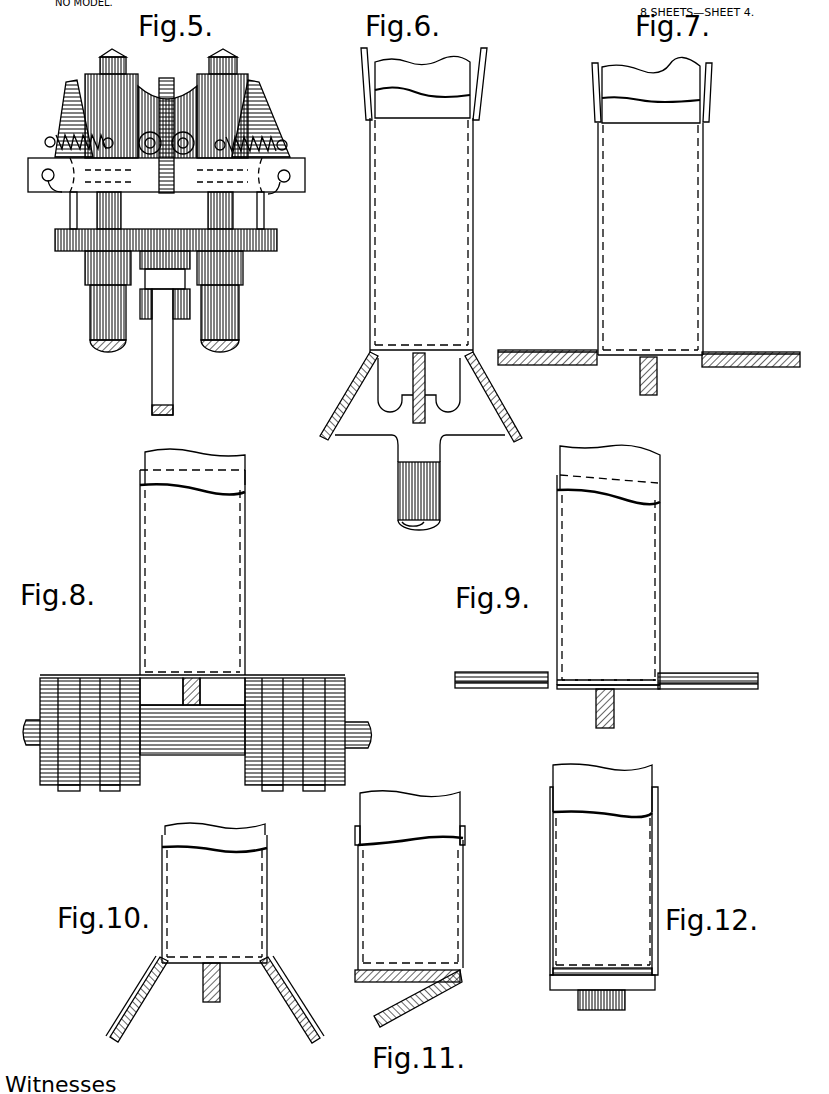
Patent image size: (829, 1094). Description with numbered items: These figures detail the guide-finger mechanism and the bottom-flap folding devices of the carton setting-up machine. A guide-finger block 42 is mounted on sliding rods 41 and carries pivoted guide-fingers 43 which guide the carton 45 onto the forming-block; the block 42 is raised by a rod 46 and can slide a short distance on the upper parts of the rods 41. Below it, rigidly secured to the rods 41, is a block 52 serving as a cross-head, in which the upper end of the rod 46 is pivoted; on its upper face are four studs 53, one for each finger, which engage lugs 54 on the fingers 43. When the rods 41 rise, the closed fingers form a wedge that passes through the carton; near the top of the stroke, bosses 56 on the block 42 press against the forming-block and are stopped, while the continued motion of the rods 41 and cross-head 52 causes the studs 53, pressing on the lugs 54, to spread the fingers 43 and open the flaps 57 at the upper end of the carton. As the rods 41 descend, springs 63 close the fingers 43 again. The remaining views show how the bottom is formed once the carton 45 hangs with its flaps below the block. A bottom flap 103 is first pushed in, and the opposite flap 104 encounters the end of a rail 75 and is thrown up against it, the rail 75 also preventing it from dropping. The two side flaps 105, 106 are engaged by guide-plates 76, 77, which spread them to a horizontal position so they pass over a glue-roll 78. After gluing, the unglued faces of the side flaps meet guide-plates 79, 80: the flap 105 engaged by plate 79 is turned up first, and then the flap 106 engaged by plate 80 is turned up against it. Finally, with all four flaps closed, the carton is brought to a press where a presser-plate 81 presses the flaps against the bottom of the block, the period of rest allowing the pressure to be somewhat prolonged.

In FIG. 5, the sliding rods 41 is at (90, 316).
In FIG. 5, the guide-finger block 42 is at (305, 172).
In FIG. 5, the guide-fingers 43 is at (75, 98).
In FIG. 6, the carton 45 is at (458, 220).
In FIG. 7, the carton 45 is at (685, 220).
In FIG. 8, the carton 45 is at (228, 572).
In FIG. 9, the carton 45 is at (660, 540).
In FIG. 10, the carton 45 is at (245, 893).
In FIG. 11, the carton 45 is at (445, 890).
In FIG. 12, the carton 45 is at (645, 852).
In FIG. 5, the rod 46 is at (165, 372).
In FIG. 5, the block 52 is at (270, 242).
In FIG. 5, the studs 53 is at (176, 208).
In FIG. 5, the lugs 54 is at (68, 185).
In FIG. 5, the bosses 56 is at (203, 82).
In FIG. 6, the flaps 57 is at (364, 58).
In FIG. 7, the flaps 57 is at (594, 85).
In FIG. 5, the springs 63 is at (62, 138).
In FIG. 6, the rail 75 is at (425, 372).
In FIG. 7, the rail 75 is at (657, 378).
In FIG. 8, the rail 75 is at (200, 695).
In FIG. 9, the rail 75 is at (614, 712).
In FIG. 10, the rail 75 is at (220, 995).
In FIG. 6, the guide-plate 76 is at (350, 415).
In FIG. 7, the guide-plate 76 is at (545, 366).
In FIG. 6, the guide-plate 77 is at (490, 415).
In FIG. 7, the guide-plate 77 is at (755, 368).
In FIG. 8, the glue-roll 78 is at (340, 695).
In FIG. 9, the guide-plate 79 is at (500, 672).
In FIG. 10, the guide-plate 79 is at (140, 990).
In FIG. 11, the guide-plate 79 is at (385, 982).
In FIG. 9, the guide-plate 80 is at (715, 673).
In FIG. 10, the guide-plate 80 is at (290, 992).
In FIG. 11, the guide-plate 80 is at (430, 1005).
In FIG. 12, the presser-plate 81 is at (628, 985).
In FIG. 9, the bottom flap 103 is at (600, 680).
In FIG. 9, the flap 104 is at (575, 690).
In FIG. 6, the side flap 105 is at (345, 392).
In FIG. 7, the side flap 105 is at (540, 345).
In FIG. 9, the side flap 105 is at (495, 689).
In FIG. 10, the side flap 105 is at (128, 1012).
In FIG. 6, the side flap 106 is at (505, 420).
In FIG. 7, the side flap 106 is at (755, 350).
In FIG. 9, the side flap 106 is at (712, 690).
In FIG. 10, the side flap 106 is at (300, 1030).